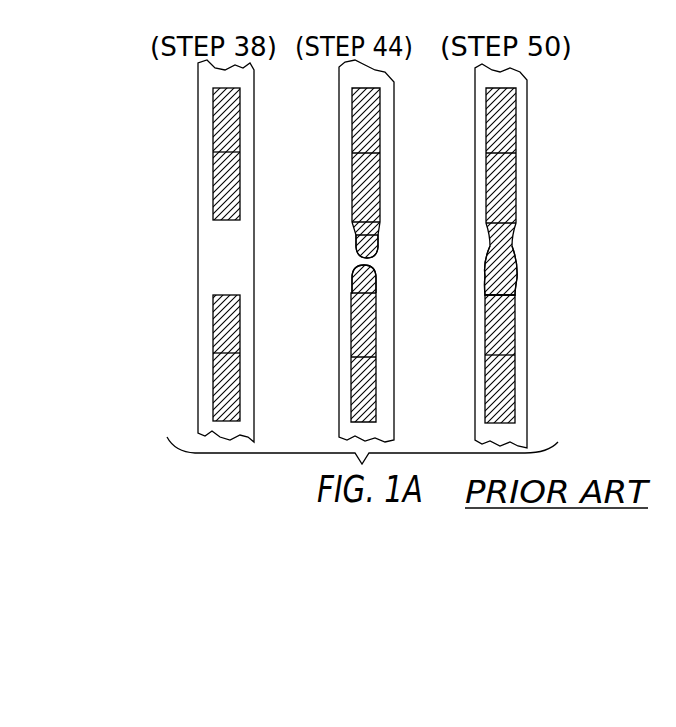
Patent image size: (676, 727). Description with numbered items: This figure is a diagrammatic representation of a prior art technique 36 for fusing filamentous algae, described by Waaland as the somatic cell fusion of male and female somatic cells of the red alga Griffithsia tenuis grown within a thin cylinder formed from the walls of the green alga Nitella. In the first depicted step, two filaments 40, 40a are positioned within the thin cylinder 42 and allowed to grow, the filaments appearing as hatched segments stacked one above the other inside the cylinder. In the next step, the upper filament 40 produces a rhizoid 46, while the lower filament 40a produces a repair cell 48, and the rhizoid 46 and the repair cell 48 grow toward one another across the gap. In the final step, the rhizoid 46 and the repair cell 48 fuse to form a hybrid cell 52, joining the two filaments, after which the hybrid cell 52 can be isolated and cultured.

The technique 36 is at (113, 101).
The upper filament 40 is at (226, 190).
The lower filament 40a is at (560, 316).
The thin cylinder 42 is at (198, 262).
The rhizoid 46 is at (355, 242).
The repair cell 48 is at (372, 284).
The hybrid cell 52 is at (508, 255).